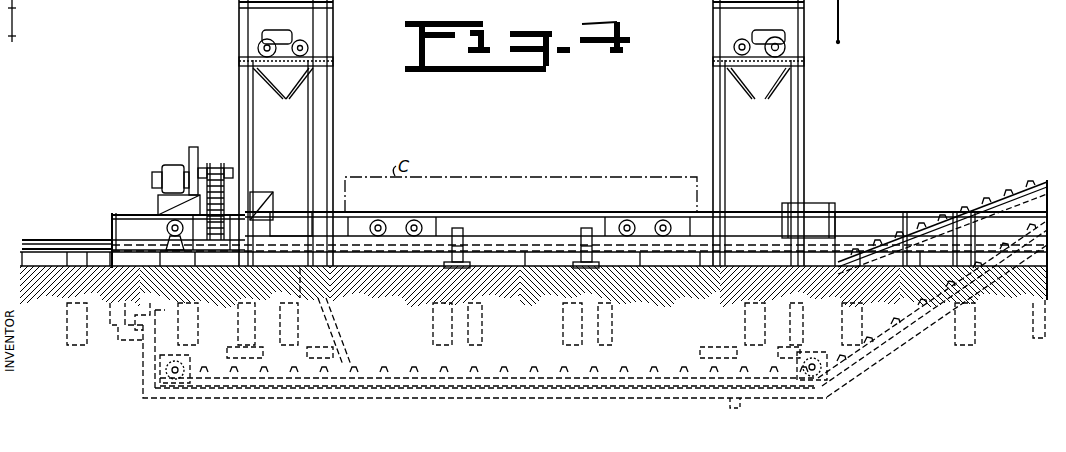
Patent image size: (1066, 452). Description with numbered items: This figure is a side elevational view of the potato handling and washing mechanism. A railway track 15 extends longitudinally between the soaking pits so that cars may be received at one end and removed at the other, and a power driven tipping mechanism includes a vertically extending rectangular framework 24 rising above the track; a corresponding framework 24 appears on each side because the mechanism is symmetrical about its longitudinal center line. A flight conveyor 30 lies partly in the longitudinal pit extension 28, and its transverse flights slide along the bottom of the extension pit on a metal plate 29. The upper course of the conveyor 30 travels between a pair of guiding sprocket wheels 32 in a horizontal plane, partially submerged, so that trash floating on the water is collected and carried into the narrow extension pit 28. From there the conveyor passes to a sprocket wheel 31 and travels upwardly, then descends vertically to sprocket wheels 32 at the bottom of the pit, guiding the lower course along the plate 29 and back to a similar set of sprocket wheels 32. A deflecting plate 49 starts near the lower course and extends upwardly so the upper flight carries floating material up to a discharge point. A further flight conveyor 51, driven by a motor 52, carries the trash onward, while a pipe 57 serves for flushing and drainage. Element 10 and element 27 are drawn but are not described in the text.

The frame / section indicator 10 is at (840, 23).
The railway track 15 is at (54, 241).
The vertically extending rectangular framework 24 is at (334, 115).
The drive housing 27 is at (826, 198).
The longitudinal pit extension 28 is at (172, 394).
The plate 29 is at (526, 373).
The flight conveyor 30 is at (1012, 191).
The sprocket wheel 31 is at (165, 229).
The guiding sprocket wheels 32 is at (825, 337).
The deflecting plate 49 is at (340, 322).
The flight conveyor 51 is at (216, 166).
The motor 52 is at (170, 165).
The pipe 57 is at (732, 400).